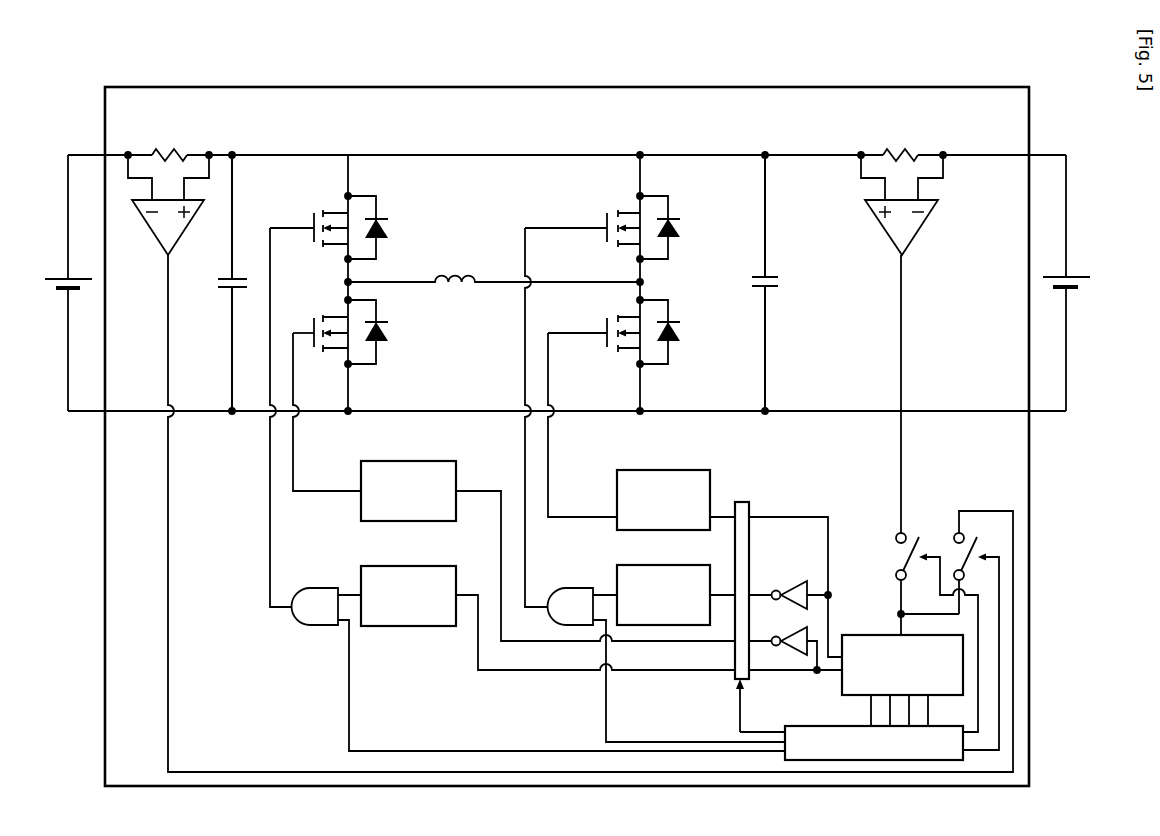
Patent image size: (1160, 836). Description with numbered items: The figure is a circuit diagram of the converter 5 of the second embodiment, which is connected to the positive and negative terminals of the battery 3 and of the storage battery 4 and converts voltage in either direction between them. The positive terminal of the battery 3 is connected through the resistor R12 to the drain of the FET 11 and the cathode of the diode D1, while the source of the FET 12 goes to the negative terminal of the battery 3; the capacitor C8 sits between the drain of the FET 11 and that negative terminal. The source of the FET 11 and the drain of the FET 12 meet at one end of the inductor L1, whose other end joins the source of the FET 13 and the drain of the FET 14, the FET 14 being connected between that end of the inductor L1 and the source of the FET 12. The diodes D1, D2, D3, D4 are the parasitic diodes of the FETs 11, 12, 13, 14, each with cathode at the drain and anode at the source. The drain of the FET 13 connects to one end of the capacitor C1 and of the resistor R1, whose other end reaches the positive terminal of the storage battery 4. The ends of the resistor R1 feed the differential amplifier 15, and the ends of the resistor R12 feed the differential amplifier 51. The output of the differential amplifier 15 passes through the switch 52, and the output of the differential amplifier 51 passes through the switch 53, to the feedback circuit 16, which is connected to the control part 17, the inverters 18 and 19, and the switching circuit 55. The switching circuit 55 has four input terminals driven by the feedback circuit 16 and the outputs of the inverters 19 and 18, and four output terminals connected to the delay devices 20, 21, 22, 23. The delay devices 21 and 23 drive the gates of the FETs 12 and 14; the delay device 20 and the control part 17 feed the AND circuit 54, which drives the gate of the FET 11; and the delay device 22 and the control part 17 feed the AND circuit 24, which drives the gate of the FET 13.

The converter 5 is at (105, 102).
The battery 3 is at (55, 269).
The storage battery 4 is at (1078, 269).
The resistor R12 is at (182, 146).
The resistor R1 is at (917, 148).
The differential amplifier 51 is at (156, 236).
The differential amplifier 15 is at (888, 234).
The FET 11 is at (320, 205).
The FET 12 is at (319, 312).
The FET 13 is at (612, 205).
The FET 14 is at (608, 320).
The diode D1 is at (397, 229).
The diode D2 is at (397, 334).
The diode D3 is at (688, 228).
The diode D4 is at (688, 334).
The inductor L1 is at (457, 270).
The capacitor C1 is at (787, 284).
The capacitor C8 is at (226, 298).
The delay device 20 is at (376, 565).
The delay device 21 is at (376, 460).
The delay device 22 is at (631, 565).
The delay device 23 is at (631, 469).
The AND circuit 24 is at (578, 587).
The AND circuit 54 is at (310, 627).
The switching circuit 55 is at (745, 497).
The inverter 19 is at (791, 581).
The inverter 18 is at (803, 633).
The feedback circuit 16 is at (877, 626).
The control part 17 is at (843, 725).
The switch 52 is at (892, 553).
The switch 53 is at (952, 553).